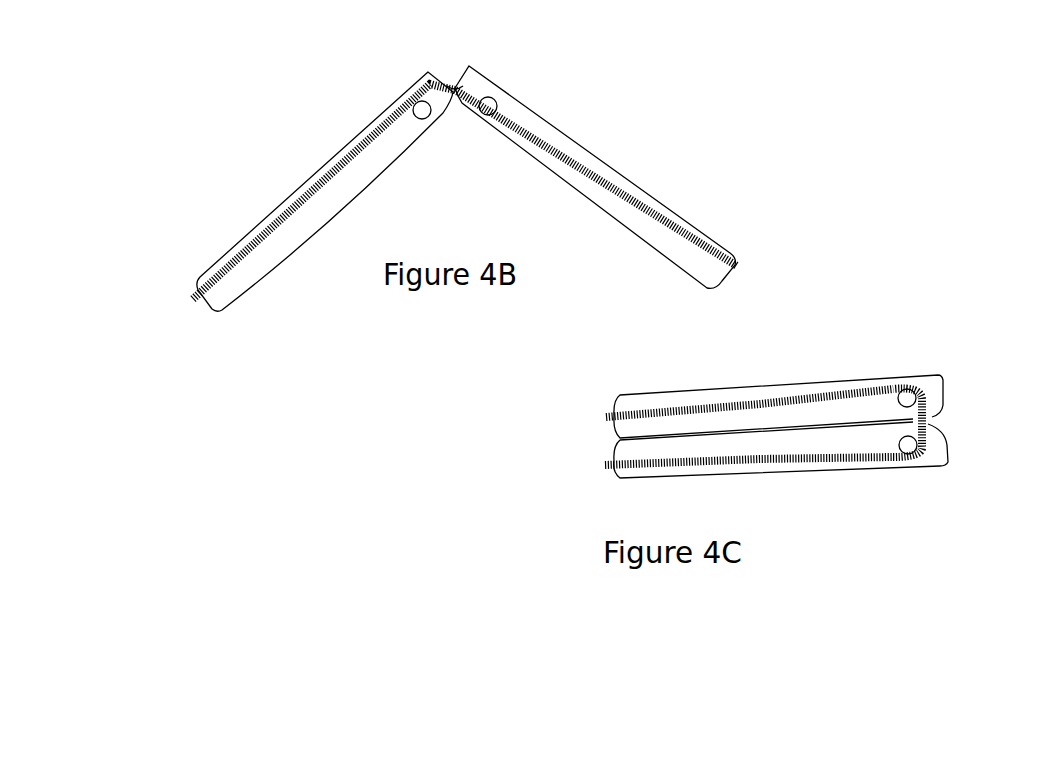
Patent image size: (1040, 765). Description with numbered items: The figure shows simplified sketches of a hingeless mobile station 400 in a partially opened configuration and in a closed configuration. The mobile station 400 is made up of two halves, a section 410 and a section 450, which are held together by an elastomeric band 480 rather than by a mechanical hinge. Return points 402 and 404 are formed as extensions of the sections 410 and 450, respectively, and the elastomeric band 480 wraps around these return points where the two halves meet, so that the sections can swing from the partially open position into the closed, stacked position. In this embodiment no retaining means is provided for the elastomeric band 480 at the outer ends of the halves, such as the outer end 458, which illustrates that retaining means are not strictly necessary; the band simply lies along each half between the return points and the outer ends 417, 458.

In FIG. 4B, the mobile station 400 is at (815, 146).
In FIG. 4C, the mobile station 400 is at (929, 494).
In FIG. 4B, the return point 402 is at (483, 117).
In FIG. 4C, the return point 402 is at (893, 440).
In FIG. 4B, the return point 404 is at (421, 120).
In FIG. 4C, the return point 404 is at (878, 387).
In FIG. 4B, the section 410 is at (681, 214).
In FIG. 4C, the section 410 is at (802, 475).
In FIG. 4B, the second conductive layer 417 is at (723, 287).
In FIG. 4C, the second conductive layer 417 is at (620, 478).
In FIG. 4B, the section 450 is at (263, 213).
In FIG. 4C, the section 450 is at (695, 388).
In FIG. 4B, the outer end 458 is at (213, 307).
In FIG. 4C, the outer end 458 is at (615, 405).
In FIG. 4B, the elastomeric band 480 is at (456, 86).
In FIG. 4C, the elastomeric band 480 is at (608, 465).